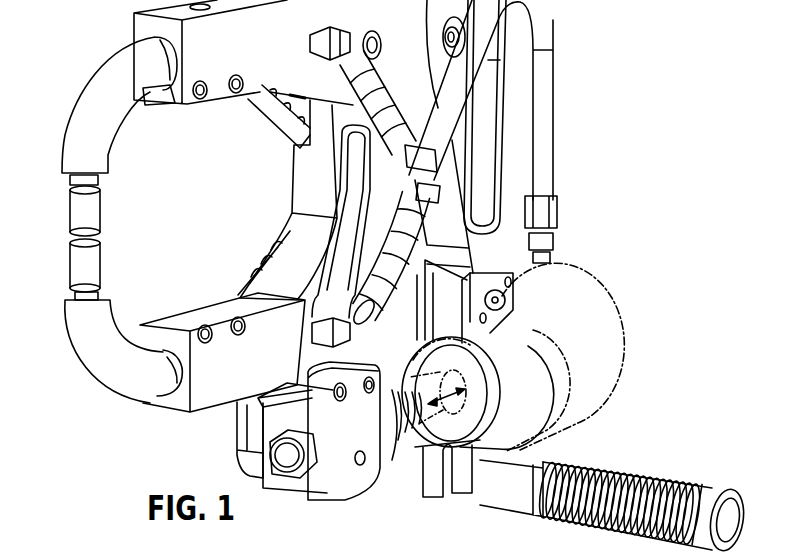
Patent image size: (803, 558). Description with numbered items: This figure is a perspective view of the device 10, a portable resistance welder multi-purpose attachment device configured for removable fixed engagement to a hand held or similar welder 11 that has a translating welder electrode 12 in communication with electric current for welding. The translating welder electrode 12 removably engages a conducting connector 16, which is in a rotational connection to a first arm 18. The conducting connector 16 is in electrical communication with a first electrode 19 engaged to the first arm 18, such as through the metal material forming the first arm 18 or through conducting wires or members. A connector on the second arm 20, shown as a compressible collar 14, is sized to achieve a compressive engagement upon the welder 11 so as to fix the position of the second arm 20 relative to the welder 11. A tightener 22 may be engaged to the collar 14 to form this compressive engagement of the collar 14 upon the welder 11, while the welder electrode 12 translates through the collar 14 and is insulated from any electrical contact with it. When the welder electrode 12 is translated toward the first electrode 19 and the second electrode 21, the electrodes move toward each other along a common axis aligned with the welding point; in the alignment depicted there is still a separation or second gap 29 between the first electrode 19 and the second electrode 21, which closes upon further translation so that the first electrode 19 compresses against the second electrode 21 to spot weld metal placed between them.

The device 10 is at (612, 258).
The welder 11 is at (418, 345).
The translating welder electrode 12 is at (457, 453).
The compressible collar 14 is at (523, 407).
The conducting connector 16 is at (397, 447).
The first arm 18 is at (232, 320).
The first electrode 19 is at (93, 280).
The second arm 20 is at (243, 50).
The second electrode 21 is at (93, 217).
The tightener 22 is at (668, 478).
The second gap 29 is at (95, 233).